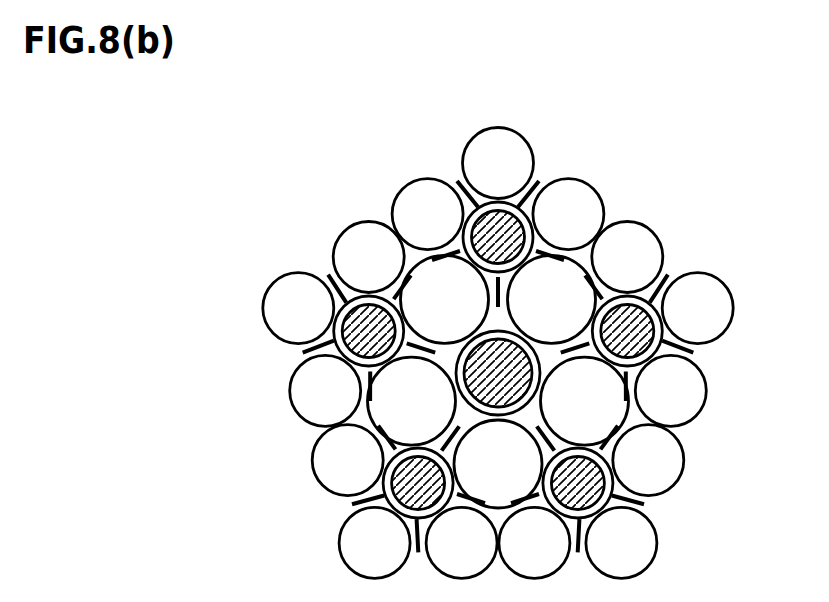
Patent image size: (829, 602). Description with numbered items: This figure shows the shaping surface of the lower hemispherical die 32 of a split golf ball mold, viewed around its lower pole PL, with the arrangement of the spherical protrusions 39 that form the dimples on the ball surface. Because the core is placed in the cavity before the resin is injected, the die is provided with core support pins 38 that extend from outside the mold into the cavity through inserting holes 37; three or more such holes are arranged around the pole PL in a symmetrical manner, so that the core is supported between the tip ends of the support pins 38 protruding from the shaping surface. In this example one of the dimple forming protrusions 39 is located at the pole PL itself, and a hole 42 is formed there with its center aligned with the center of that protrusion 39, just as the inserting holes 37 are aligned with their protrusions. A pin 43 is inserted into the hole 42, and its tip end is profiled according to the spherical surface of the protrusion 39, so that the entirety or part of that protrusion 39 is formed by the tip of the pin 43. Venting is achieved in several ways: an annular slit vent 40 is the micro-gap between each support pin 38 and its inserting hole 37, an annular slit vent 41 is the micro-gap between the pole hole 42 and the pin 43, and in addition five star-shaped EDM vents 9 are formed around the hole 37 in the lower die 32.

The lower hemispherical die 32 is at (689, 193).
The spherical protrusion 39 is at (580, 208).
The lower pole PL is at (479, 366).
The annular slit vent 40 is at (338, 307).
The inserting hole 37 is at (355, 332).
The core support pin 38 is at (353, 307).
The EDM vent 9 is at (370, 377).
The annular slit vent 41 is at (527, 337).
The pin 43 is at (515, 367).
The hole 42 is at (512, 398).